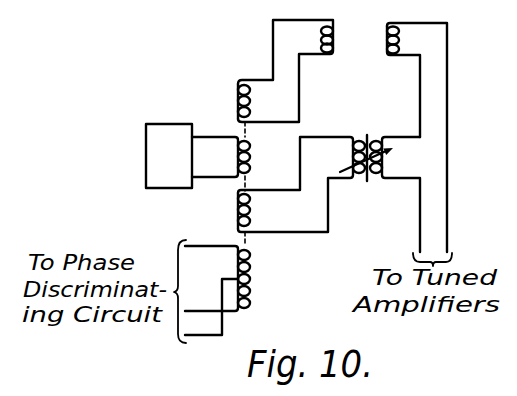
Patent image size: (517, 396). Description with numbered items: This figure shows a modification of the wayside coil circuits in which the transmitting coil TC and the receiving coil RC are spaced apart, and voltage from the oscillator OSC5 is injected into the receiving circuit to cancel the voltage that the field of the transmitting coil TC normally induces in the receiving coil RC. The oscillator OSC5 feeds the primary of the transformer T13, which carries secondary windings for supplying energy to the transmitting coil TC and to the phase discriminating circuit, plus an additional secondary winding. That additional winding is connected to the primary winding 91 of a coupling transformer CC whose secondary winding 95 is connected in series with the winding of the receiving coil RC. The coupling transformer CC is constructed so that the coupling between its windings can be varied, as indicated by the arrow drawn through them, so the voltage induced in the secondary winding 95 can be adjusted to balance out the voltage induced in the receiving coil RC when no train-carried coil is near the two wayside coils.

The primary winding 91 is at (352, 152).
The secondary winding 95 is at (383, 163).
The transformer T13 is at (222, 196).
The transmitting coil TC is at (287, 71).
The receiving coil RC is at (412, 137).
The coupling transformer CC is at (330, 193).
The oscillator OSC5 is at (145, 131).